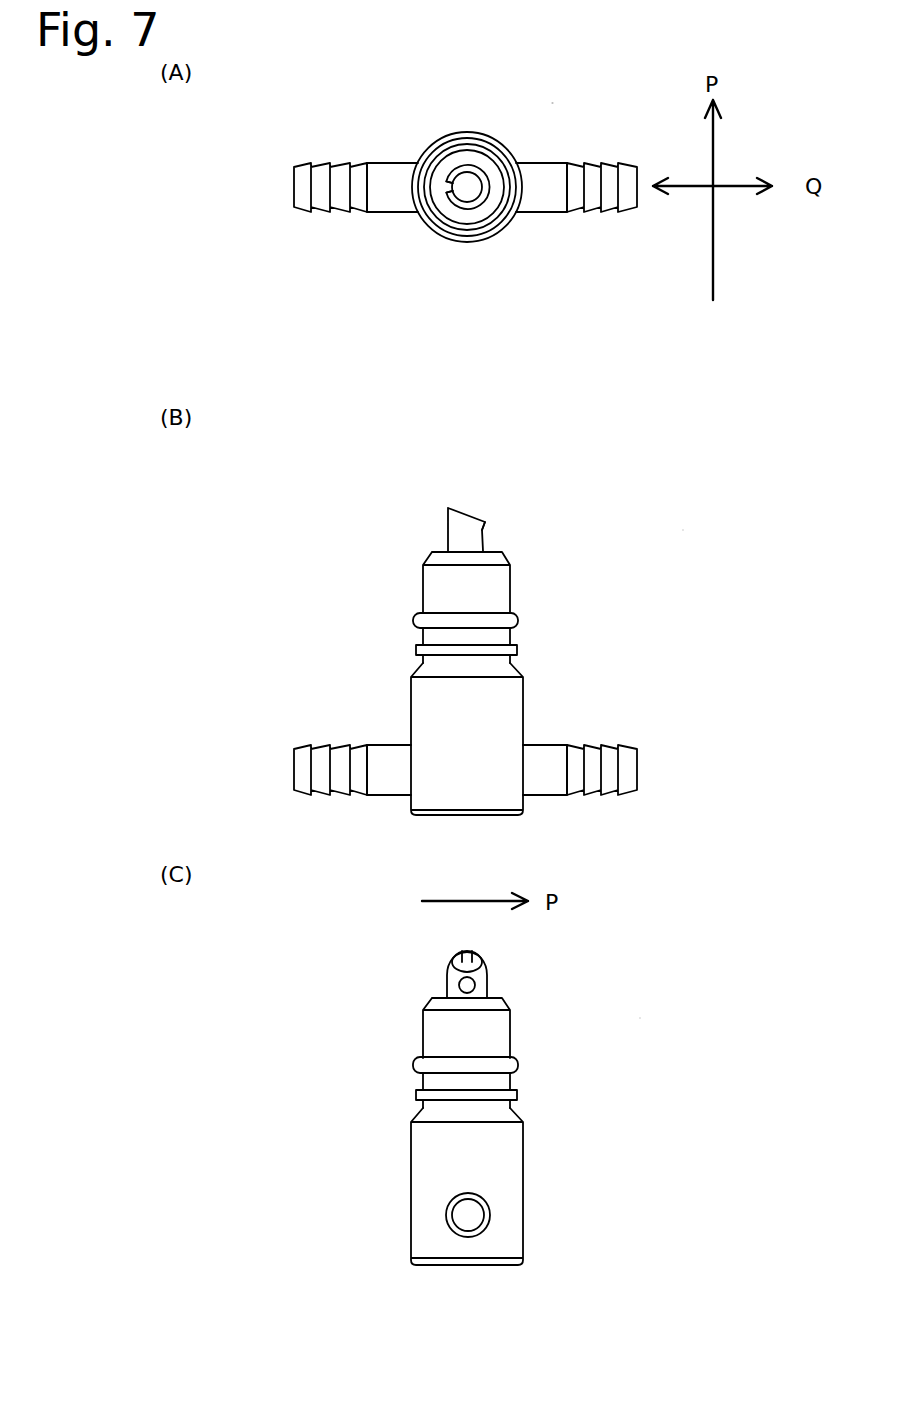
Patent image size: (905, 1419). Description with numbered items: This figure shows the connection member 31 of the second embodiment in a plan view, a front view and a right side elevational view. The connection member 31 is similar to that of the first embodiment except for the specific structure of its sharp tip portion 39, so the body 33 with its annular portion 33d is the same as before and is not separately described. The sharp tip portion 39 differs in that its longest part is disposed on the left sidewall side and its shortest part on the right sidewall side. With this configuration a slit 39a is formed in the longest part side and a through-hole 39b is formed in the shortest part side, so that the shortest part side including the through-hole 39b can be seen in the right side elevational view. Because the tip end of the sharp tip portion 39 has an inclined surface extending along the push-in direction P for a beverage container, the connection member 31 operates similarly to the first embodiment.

The connection member 31 is at (562, 101).
The connector body 33 is at (503, 227).
The O-ring / annular flange 33d is at (413, 628).
The sharp tip portion 39 is at (465, 172).
The slit 39a is at (447, 189).
The through-hole 39b is at (484, 533).